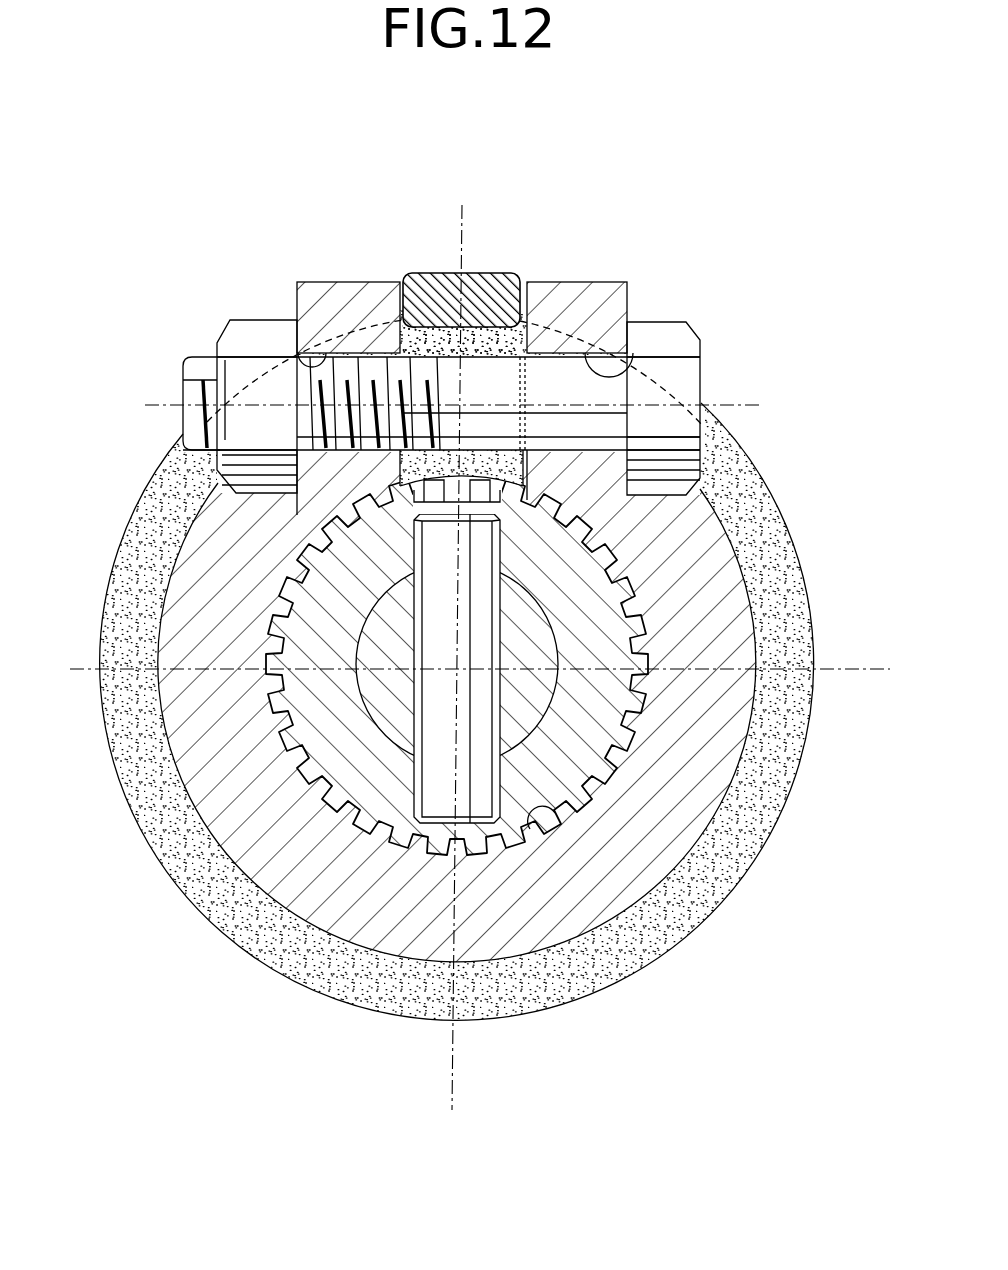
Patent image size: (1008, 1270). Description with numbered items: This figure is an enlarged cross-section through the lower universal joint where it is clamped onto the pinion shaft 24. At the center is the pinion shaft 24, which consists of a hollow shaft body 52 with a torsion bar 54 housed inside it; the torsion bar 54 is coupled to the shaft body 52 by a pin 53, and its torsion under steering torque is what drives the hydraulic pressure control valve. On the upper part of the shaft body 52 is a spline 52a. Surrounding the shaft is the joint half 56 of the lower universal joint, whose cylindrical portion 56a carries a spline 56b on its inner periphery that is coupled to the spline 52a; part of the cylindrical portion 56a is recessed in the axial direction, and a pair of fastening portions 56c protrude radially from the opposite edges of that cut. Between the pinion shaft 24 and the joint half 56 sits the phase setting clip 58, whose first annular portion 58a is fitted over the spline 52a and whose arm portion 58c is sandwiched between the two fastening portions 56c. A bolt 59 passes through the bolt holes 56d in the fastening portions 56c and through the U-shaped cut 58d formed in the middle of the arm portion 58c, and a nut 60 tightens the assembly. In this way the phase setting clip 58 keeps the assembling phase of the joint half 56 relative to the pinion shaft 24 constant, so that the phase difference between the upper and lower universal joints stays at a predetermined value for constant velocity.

The pinion shaft 24 is at (272, 588).
The hollow shaft body 52 is at (356, 627).
The spline 52a is at (348, 842).
The pin 53 is at (476, 631).
The torsion bar 54 is at (496, 664).
The joint half 56 is at (732, 535).
The cylindrical portion 56a is at (690, 830).
The spline 56b is at (532, 808).
The fastening portions 56c is at (353, 290).
The bolt holes 56d is at (298, 358).
The phase setting clip 58 is at (111, 788).
The first annular portion 58a is at (783, 757).
The arm portion 58c is at (440, 280).
The U-shaped cut 58d is at (490, 320).
The bolt 59 is at (705, 372).
The nut 60 is at (236, 338).